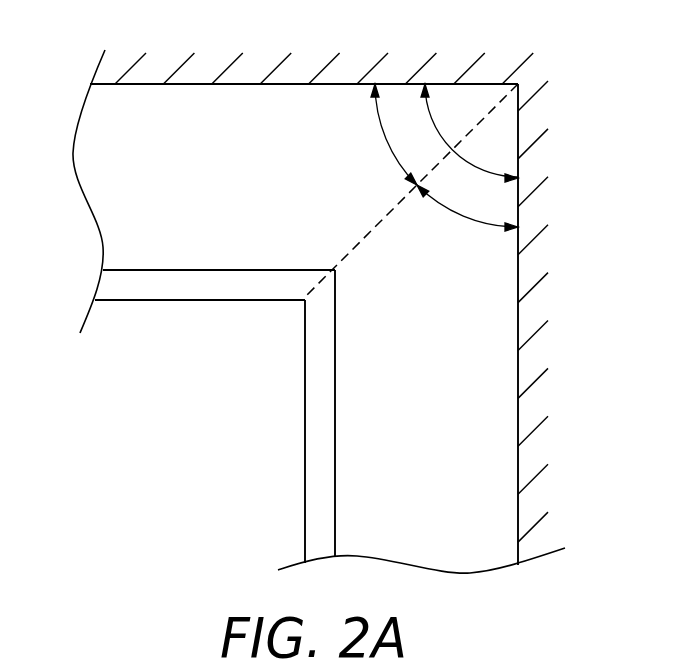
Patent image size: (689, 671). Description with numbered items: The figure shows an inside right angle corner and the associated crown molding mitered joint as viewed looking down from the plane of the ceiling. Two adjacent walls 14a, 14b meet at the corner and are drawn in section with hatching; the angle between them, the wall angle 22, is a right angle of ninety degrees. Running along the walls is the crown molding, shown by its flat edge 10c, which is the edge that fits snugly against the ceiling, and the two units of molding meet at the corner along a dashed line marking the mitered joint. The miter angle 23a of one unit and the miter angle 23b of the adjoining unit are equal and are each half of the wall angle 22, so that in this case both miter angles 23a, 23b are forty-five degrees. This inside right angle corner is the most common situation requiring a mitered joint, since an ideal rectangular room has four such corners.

The first wall surface 14a is at (298, 84).
The second wall surface 14b is at (518, 267).
The flat edge 10c is at (186, 283).
The wall angle 22 is at (412, 190).
The miter angle 23a is at (383, 134).
The miter angle 23b is at (467, 219).